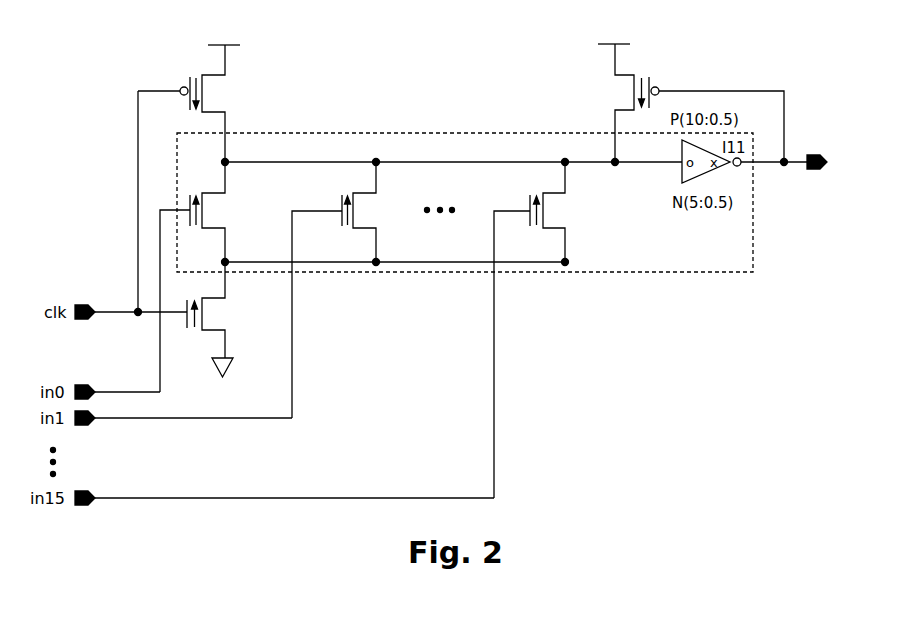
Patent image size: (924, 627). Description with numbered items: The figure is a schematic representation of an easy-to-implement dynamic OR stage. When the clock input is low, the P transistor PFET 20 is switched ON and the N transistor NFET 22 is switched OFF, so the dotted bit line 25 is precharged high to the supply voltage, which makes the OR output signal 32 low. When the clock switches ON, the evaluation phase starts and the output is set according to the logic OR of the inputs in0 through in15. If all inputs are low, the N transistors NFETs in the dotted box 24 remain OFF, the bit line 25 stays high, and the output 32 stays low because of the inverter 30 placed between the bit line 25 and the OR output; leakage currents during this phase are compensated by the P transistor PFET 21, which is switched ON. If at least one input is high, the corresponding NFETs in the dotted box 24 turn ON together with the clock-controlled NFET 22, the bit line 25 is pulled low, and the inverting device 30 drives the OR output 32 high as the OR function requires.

The P transistor PFET 20 is at (255, 98).
The P transistor PFET 21 is at (653, 67).
The N transistor NFET 22 is at (243, 316).
The dotted box 24 is at (693, 272).
The dotted bit line 25 is at (430, 158).
The inverter 30 is at (777, 186).
The OR output signal 32 is at (798, 157).